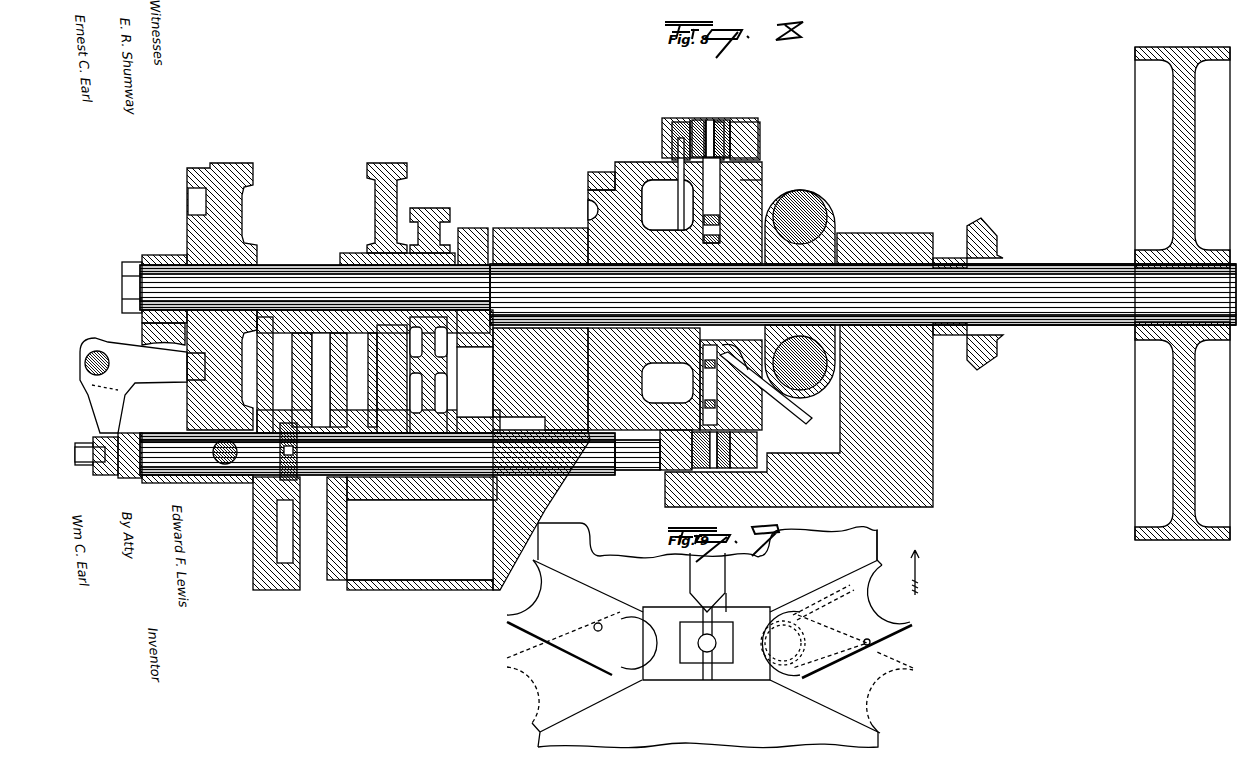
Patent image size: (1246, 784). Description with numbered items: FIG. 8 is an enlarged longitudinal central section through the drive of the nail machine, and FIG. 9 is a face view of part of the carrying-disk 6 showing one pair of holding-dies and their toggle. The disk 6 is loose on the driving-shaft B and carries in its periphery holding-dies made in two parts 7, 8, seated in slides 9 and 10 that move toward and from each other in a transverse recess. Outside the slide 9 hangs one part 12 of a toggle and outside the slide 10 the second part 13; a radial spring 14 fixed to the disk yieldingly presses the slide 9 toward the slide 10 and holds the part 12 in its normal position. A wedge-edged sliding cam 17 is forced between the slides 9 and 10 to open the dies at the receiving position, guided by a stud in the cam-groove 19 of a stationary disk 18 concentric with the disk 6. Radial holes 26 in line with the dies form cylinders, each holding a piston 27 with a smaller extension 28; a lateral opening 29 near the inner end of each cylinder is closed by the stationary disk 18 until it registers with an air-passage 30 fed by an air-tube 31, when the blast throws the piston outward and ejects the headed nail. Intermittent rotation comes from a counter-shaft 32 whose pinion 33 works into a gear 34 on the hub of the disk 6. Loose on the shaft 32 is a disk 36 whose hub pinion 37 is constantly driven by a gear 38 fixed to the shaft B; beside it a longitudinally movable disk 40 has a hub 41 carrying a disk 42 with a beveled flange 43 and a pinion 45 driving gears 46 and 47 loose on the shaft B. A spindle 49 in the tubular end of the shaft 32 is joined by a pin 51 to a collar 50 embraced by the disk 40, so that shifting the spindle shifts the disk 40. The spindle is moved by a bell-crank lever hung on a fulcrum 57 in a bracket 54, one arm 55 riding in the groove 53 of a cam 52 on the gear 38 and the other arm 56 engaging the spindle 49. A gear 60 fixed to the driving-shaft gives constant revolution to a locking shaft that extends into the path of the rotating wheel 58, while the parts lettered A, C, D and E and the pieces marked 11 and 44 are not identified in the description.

In FIG. 8, the driving shaft C is at (688, 276).
In FIG. 8, the driving-shaft B is at (1084, 285).
In FIG. 8, the casing A is at (799, 370).
In FIG. 8, the fly wheel D is at (1132, 232).
In FIG. 8, the collar E is at (968, 290).
In FIG. 8, the groove 53 is at (222, 214).
In FIG. 8, the cam 52 is at (222, 370).
In FIG. 8, the bracket 54 is at (164, 300).
In FIG. 8, the arm of bell-crank lever 55 is at (142, 385).
In FIG. 8, the arm of bell-crank lever 56 is at (105, 399).
In FIG. 8, the fulcrum 57 is at (100, 352).
In FIG. 8, the gear 38 is at (223, 387).
In FIG. 8, the counter-shaft 32 is at (400, 454).
In FIG. 8, the pinion 33 is at (662, 468).
In FIG. 8, the gear 34 is at (644, 379).
In FIG. 8, the disk 36 is at (267, 533).
In FIG. 8, the pinion 37 is at (230, 484).
In FIG. 8, the disk 40 is at (286, 531).
In FIG. 8, the hub 41 is at (329, 528).
In FIG. 8, the disk 42 is at (319, 380).
In FIG. 8, the flange 43 is at (422, 488).
In FIG. 8, the chamber 44 is at (420, 545).
In FIG. 8, the pinion 45 is at (409, 517).
In FIG. 8, the gear 46 is at (417, 320).
In FIG. 8, the gear 47 is at (410, 215).
In FIG. 8, the spindle 49 is at (125, 470).
In FIG. 8, the collar 50 is at (289, 444).
In FIG. 8, the pin 51 is at (279, 451).
In FIG. 8, the rotating wheel 58 is at (590, 178).
In FIG. 8, the gear 60 is at (475, 319).
In FIG. 8, the holding-die part 7 is at (708, 118).
In FIG. 9, the holding-die part 7 is at (706, 642).
In FIG. 8, the holding-die part 8 is at (718, 118).
In FIG. 9, the holding-die part 8 is at (712, 643).
In FIG. 8, the slide 9 is at (694, 118).
In FIG. 9, the slide 9 is at (695, 643).
In FIG. 8, the slide 10 is at (728, 118).
In FIG. 9, the slide 10 is at (773, 641).
In FIG. 8, the plate 11 is at (691, 295).
In FIG. 8, the toggle part 12 is at (711, 295).
In FIG. 9, the toggle part 12 is at (575, 641).
In FIG. 8, the toggle part 13 is at (745, 295).
In FIG. 9, the toggle part 13 is at (841, 604).
In FIG. 8, the radial spring 14 is at (667, 291).
In FIG. 9, the radial spring 14 is at (600, 635).
In FIG. 9, the sliding cam 17 is at (708, 582).
In FIG. 8, the stationary disk 18 is at (731, 320).
In FIG. 8, the cam-groove 19 is at (762, 180).
In FIG. 8, the radial holes 26 is at (712, 200).
In FIG. 8, the piston 27 is at (712, 385).
In FIG. 8, the extension 28 is at (800, 227).
In FIG. 8, the lateral opening 29 is at (800, 361).
In FIG. 8, the air-passage 30 is at (737, 357).
In FIG. 8, the air-tube 31 is at (766, 392).
In FIG. 9, the carrying-disk 6 is at (722, 635).